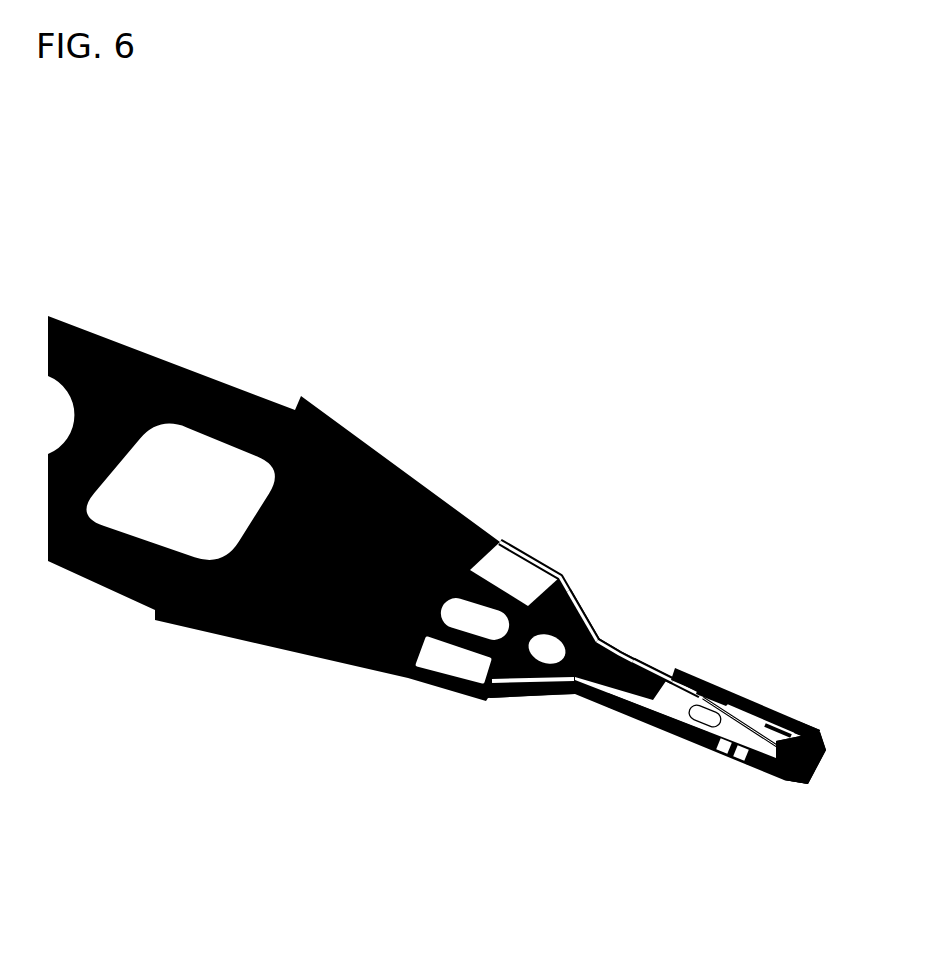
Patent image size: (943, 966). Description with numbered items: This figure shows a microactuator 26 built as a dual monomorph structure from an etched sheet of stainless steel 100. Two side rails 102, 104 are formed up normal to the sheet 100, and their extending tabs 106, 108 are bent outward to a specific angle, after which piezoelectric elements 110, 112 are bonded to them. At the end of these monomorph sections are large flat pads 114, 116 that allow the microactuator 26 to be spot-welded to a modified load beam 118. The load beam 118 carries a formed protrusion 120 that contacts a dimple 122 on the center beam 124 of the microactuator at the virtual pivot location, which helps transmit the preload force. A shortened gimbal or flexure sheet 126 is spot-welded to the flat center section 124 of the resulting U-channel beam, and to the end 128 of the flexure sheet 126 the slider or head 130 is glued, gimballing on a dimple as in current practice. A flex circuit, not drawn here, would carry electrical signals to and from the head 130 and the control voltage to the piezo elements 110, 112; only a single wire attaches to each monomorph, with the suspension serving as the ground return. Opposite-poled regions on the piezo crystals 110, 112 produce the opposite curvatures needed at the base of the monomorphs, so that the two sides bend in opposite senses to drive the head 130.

The microactuator 26 is at (673, 662).
The etched sheet of stainless steel 100 is at (708, 677).
The side rail 102 is at (637, 643).
The side rail 104 is at (665, 703).
The extending tab 106 is at (557, 575).
The extending tab 108 is at (480, 688).
The piezoelectric element 110 is at (577, 592).
The piezoelectric element 112 is at (537, 690).
The flat pad 114 is at (513, 563).
The flat pad 116 is at (437, 652).
The load beam 118 is at (428, 477).
The formed protrusion 120 is at (613, 638).
The dimple 122 is at (783, 772).
The center beam 124 is at (755, 767).
The gimbal or flexure sheet 126 is at (722, 727).
The end of the gimbal or flexure sheet 128 is at (810, 726).
The slider or head 130 is at (813, 757).